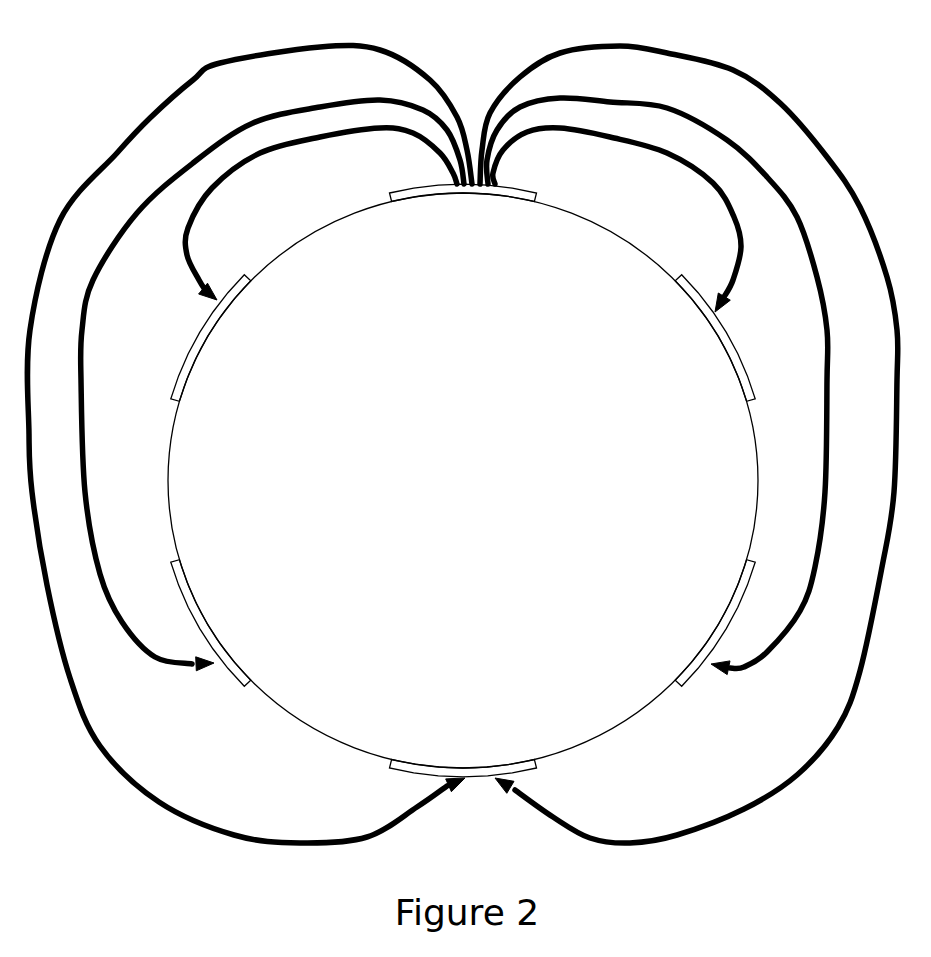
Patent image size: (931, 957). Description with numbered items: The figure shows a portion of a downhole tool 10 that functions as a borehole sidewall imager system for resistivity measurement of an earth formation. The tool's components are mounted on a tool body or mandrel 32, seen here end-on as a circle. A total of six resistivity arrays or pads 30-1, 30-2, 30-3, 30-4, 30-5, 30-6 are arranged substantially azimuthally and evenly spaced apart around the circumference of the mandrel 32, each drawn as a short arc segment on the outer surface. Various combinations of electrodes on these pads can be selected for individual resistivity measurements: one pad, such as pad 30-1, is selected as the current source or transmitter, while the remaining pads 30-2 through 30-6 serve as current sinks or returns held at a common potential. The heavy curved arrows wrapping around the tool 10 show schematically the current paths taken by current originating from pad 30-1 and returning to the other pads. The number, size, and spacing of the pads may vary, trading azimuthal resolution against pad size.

The tool 10 is at (152, 45).
The mandrel 32 is at (167, 440).
The resistivity array or pad 30-1 is at (417, 185).
The resistivity array or pad 30-2 is at (692, 275).
The resistivity array or pad 30-3 is at (688, 671).
The resistivity array or pad 30-4 is at (398, 776).
The resistivity array or pad 30-5 is at (224, 667).
The resistivity array or pad 30-6 is at (191, 346).